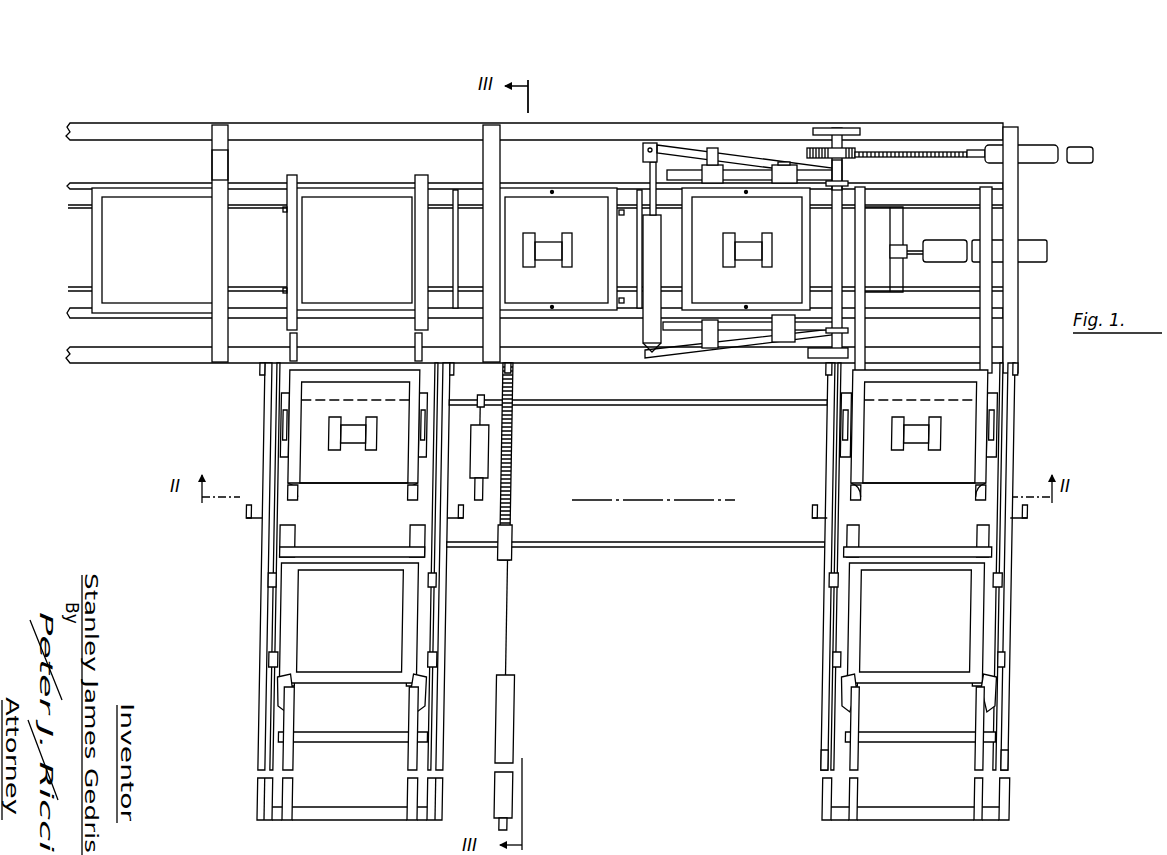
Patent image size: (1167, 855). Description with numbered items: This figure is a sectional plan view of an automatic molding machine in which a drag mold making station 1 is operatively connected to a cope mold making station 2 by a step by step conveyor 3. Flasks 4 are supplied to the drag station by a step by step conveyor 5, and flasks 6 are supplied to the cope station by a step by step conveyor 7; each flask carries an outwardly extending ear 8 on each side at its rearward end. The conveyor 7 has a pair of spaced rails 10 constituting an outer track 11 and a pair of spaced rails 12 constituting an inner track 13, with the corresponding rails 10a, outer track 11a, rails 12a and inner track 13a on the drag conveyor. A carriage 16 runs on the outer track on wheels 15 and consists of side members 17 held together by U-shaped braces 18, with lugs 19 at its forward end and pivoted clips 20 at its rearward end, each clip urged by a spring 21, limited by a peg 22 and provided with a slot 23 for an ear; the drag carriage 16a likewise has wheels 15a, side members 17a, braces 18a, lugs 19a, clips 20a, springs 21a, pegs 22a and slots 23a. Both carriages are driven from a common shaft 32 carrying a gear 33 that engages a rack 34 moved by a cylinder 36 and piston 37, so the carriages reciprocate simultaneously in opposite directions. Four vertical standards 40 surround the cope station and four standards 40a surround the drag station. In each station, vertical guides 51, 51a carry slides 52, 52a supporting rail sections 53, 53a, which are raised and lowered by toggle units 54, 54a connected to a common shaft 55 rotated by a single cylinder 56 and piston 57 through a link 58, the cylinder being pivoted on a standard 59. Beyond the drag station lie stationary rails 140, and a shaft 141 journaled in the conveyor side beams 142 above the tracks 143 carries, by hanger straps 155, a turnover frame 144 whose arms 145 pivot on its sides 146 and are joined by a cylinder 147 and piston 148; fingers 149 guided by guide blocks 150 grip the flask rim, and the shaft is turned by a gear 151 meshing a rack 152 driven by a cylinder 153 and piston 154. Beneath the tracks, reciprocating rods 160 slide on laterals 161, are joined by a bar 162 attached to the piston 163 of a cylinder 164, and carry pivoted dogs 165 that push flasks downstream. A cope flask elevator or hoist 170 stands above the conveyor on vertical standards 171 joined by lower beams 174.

The drag mold making station 1 is at (1063, 419).
The cope mold making station 2 is at (262, 422).
The step by step conveyor 3 is at (552, 160).
The flask 4 is at (810, 226).
The step by step conveyor 5 is at (1028, 737).
The flask 6 is at (372, 190).
The step by step conveyor 7 is at (265, 650).
The ear 8 is at (300, 496).
The rail 10 is at (441, 732).
The rail 10a is at (831, 756).
The outer track 11 is at (265, 717).
The outer track 11a is at (828, 717).
The rail 12 is at (290, 340).
The rail 12a is at (1003, 766).
The inner track 13 is at (417, 747).
The inner track 13a is at (865, 761).
The wheel 15 is at (272, 580).
The wheel 15a is at (834, 581).
The carriage 16 is at (272, 593).
The carriage 16a is at (838, 593).
The side member 17 is at (277, 606).
The side member 17a is at (838, 608).
The U-shaped brace 18 is at (376, 560).
The U-shaped brace 18a is at (892, 560).
The lug 19 is at (298, 532).
The lug 19a is at (862, 537).
The clip 20 is at (283, 681).
The clip 20a is at (848, 686).
The spring 21 is at (432, 696).
The spring 21a is at (1002, 697).
The peg 22 is at (432, 709).
The peg 22a is at (998, 711).
The slot 23 is at (410, 692).
The slot 23a is at (982, 696).
The shaft 32 is at (681, 548).
The gear 33 is at (515, 537).
The rack 34 is at (514, 443).
The cylinder 36 is at (521, 703).
The piston 37 is at (512, 604).
The vertical standard 40 is at (260, 370).
The vertical standard 40a is at (1018, 373).
The vertical guide 51 is at (282, 455).
The vertical guide 51a is at (842, 455).
The slide 52 is at (282, 440).
The slide 52a is at (842, 441).
The rail section 53 is at (292, 498).
The rail section 53a is at (990, 497).
The toggle unit 54 is at (282, 400).
The toggle unit 54a is at (842, 405).
The shaft 55 is at (603, 402).
The cylinder 56 is at (420, 405).
The piston 57 is at (479, 410).
The link 58 is at (514, 372).
The standard 59 is at (486, 492).
The stationary rail 140 is at (980, 290).
The shaft 141 is at (843, 170).
The conveyor side beam 142 is at (992, 128).
The track 143 is at (557, 182).
The turnover frame 144 is at (797, 145).
The arm 145 is at (740, 168).
The side 146 is at (675, 170).
The cylinder 147 is at (645, 320).
The piston 148 is at (650, 173).
The finger 149 is at (714, 148).
The guide block 150 is at (712, 190).
The gear 151 is at (856, 150).
The rack 152 is at (925, 150).
The cylinder 153 is at (1082, 163).
The piston 154 is at (970, 150).
The hanger strap 155 is at (847, 183).
The reciprocating rod 160 is at (283, 222).
The lateral 161 is at (455, 200).
The bar 162 is at (903, 220).
The piston 163 is at (915, 245).
The cylinder 164 is at (1035, 245).
The pivoted dog 165 is at (285, 290).
The cope flask elevator or hoist 170 is at (346, 170).
The vertical standard 171 is at (222, 128).
The lower beam 174 is at (212, 162).